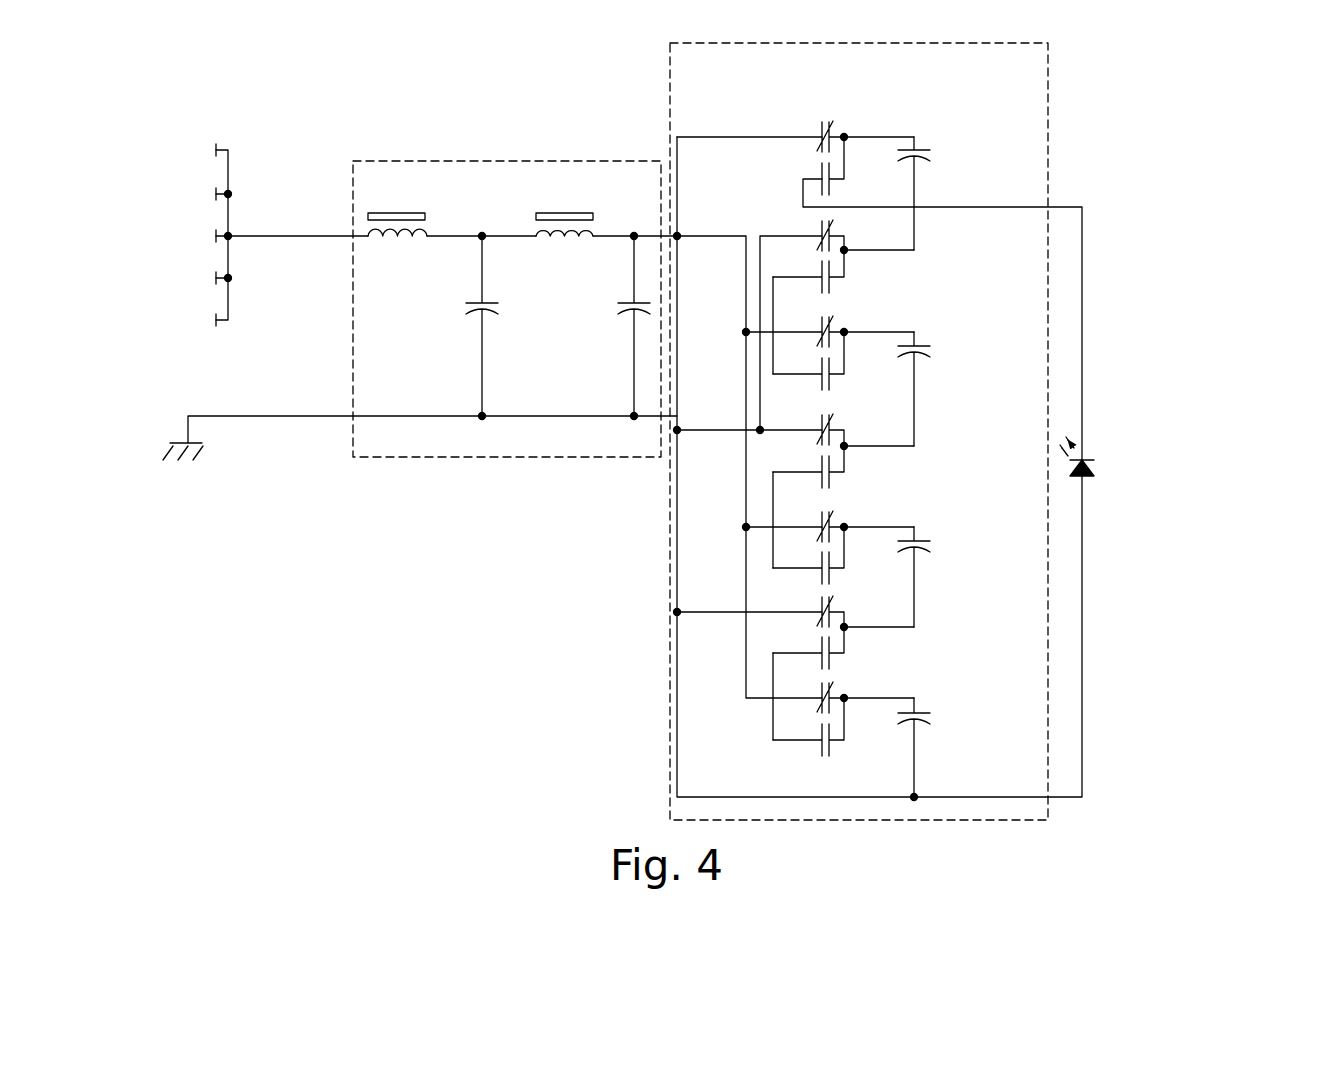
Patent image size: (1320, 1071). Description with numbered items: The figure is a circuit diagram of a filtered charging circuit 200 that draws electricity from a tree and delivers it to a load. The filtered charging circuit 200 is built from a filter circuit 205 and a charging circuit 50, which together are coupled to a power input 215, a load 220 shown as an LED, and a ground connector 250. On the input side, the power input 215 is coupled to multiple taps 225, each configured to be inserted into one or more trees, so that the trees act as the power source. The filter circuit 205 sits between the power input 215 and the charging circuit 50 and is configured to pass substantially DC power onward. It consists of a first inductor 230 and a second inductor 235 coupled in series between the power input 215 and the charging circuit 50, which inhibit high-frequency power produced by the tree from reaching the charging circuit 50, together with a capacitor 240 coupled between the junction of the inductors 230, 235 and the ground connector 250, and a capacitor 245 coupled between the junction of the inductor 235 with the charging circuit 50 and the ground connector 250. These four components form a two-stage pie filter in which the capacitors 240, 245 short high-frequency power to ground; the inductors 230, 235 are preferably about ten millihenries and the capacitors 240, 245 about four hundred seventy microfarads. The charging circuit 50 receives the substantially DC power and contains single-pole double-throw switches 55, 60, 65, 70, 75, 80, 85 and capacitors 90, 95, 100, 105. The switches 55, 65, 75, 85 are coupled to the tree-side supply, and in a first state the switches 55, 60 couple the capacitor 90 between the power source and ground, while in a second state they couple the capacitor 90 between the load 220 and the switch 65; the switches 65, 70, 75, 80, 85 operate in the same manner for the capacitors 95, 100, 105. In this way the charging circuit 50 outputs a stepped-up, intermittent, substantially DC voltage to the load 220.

The charging circuit 50 is at (1048, 88).
The switch 55 is at (854, 119).
The switch 60 is at (801, 227).
The switch 65 is at (840, 318).
The switch 70 is at (847, 475).
The switch 75 is at (851, 519).
The switch 80 is at (843, 604).
The switch 85 is at (804, 753).
The capacitor 90 is at (916, 150).
The capacitor 95 is at (916, 346).
The capacitor 100 is at (916, 541).
The capacitor 105 is at (916, 713).
The filtered charging circuit 200 is at (445, 645).
The filter circuit 205 is at (558, 161).
The power input 215 is at (260, 236).
The load 220 is at (1083, 458).
The taps 225 is at (214, 191).
The inductor 230 is at (420, 237).
The inductor 235 is at (593, 233).
The capacitor 240 is at (470, 308).
The capacitor 245 is at (632, 314).
The ground connector 250 is at (297, 416).